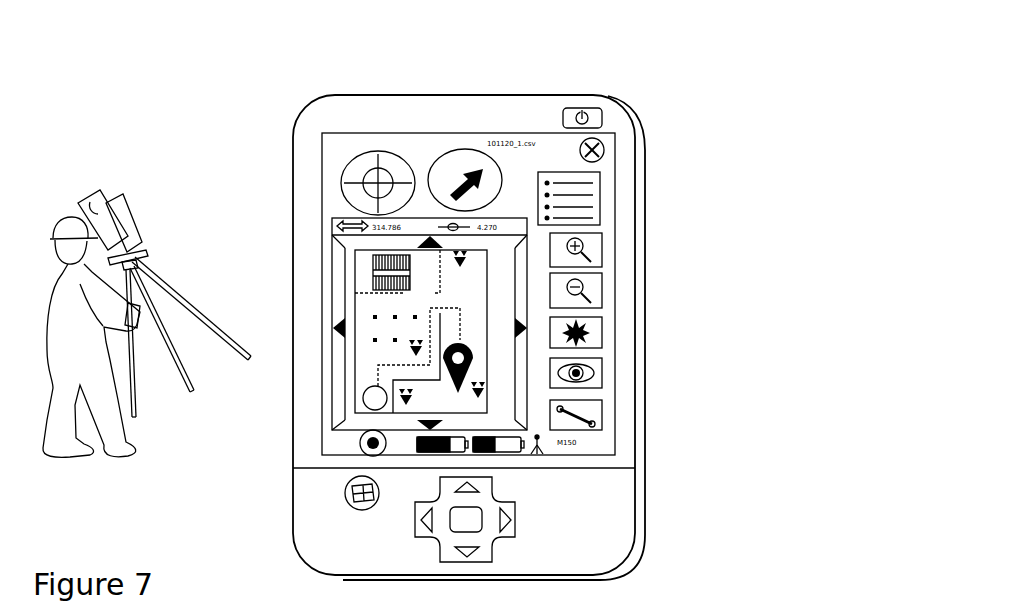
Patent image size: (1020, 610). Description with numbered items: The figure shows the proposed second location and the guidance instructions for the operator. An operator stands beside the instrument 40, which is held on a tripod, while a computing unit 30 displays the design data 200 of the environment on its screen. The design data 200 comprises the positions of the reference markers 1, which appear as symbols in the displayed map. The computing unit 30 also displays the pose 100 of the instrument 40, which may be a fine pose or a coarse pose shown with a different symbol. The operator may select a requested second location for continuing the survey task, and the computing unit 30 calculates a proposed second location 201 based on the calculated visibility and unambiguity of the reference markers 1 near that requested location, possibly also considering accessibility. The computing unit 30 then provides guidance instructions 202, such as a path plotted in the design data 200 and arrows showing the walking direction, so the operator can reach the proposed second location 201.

The reference markers 1 is at (524, 391).
The computing unit 30 is at (416, 337).
The instrument 40 is at (101, 214).
The pose 100 is at (288, 451).
The design data 200 is at (296, 169).
The proposed second location 201 is at (714, 446).
The guidance instructions 202 is at (390, 232).